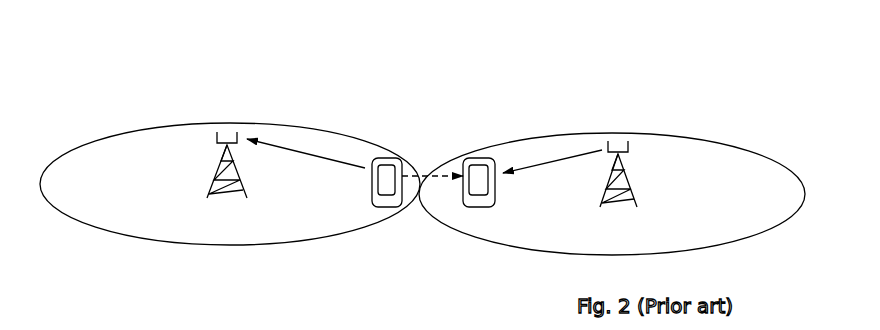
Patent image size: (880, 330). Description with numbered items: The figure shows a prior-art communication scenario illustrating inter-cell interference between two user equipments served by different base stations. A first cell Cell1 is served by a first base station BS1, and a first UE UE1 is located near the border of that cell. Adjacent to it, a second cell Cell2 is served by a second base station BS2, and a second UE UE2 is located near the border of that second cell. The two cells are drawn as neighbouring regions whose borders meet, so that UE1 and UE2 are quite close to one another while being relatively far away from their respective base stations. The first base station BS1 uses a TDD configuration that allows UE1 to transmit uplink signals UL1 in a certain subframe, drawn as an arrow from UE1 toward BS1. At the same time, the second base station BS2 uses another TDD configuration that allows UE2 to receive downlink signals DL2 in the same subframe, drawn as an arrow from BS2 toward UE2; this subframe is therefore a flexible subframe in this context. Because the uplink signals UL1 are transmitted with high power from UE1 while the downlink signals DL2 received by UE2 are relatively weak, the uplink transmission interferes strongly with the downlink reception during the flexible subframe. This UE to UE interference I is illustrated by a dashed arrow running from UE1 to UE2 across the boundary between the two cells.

The first cell Cell1 is at (143, 119).
The second cell Cell2 is at (709, 131).
The first base station BS1 is at (214, 167).
The second base station BS2 is at (637, 187).
The first UE UE1 is at (372, 182).
The second UE UE2 is at (495, 193).
The uplink signals UL1 is at (322, 148).
The downlink signals DL2 is at (554, 153).
The UE to UE interference I is at (426, 157).